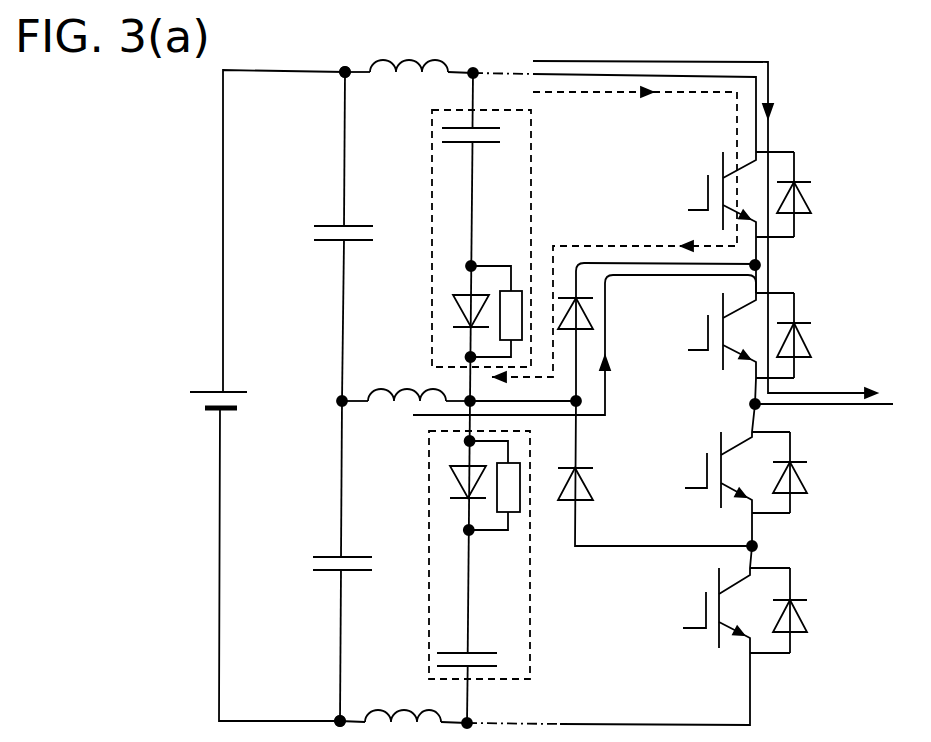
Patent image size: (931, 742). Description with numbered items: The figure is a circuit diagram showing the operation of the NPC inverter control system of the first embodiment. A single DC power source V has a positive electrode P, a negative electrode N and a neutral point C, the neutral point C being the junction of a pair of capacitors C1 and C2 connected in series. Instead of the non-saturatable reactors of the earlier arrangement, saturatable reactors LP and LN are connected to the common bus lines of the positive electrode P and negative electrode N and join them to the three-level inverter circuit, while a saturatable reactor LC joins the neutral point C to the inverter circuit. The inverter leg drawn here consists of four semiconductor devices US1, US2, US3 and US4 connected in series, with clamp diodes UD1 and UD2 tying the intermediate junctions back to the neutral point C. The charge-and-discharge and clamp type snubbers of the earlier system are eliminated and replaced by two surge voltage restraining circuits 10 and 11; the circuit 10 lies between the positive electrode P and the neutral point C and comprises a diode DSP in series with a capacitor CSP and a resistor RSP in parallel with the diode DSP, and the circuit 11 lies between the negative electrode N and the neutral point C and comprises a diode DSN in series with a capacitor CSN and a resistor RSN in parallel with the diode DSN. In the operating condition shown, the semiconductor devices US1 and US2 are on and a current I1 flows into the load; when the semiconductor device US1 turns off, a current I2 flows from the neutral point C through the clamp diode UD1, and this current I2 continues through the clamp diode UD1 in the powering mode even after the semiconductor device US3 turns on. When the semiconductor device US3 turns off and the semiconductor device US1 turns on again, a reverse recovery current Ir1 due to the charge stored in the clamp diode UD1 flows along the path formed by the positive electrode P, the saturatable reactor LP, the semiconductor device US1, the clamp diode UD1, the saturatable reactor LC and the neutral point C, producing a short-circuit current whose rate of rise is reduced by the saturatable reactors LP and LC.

The surge voltage restraining circuit 10 is at (432, 172).
The surge voltage restraining circuit 11 is at (428, 614).
The DC power source V is at (207, 401).
The positive electrode P is at (332, 89).
The neutral point C is at (323, 406).
The negative electrode N is at (322, 705).
The capacitor C1 is at (326, 236).
The capacitor C2 is at (322, 561).
The saturatable reactor LP is at (409, 55).
The saturatable reactor LC is at (406, 381).
The saturatable reactor LN is at (403, 697).
The capacitor CSP is at (502, 143).
The resistor RSP is at (518, 291).
The diode DSP is at (438, 311).
The capacitor CSN is at (498, 663).
The resistor RSN is at (513, 512).
The diode DSN is at (435, 485).
The clamp diode UD1 is at (646, 311).
The clamp diode UD2 is at (655, 492).
The semiconductor device US1 is at (735, 194).
The semiconductor device US2 is at (735, 335).
The semiconductor device US3 is at (732, 472).
The semiconductor device US4 is at (731, 610).
The current I1 is at (705, 229).
The current I2 is at (584, 345).
The reverse recovery current Ir1 is at (614, 234).